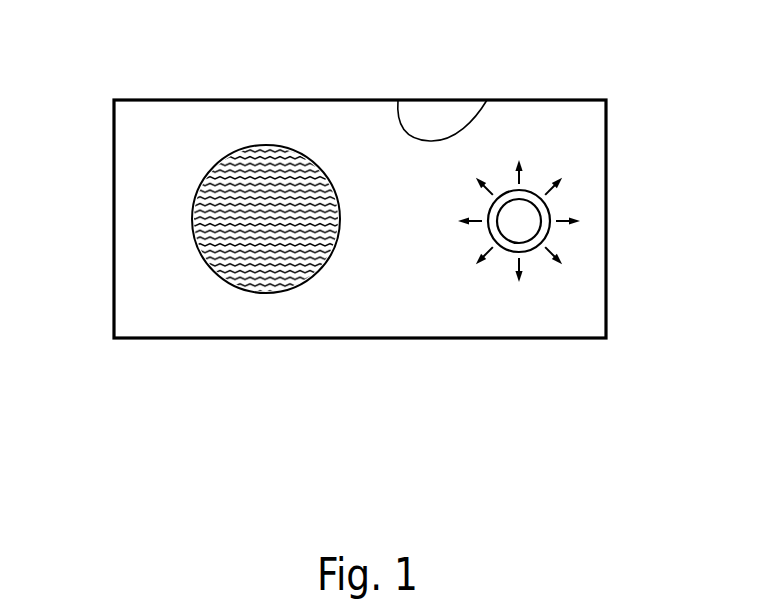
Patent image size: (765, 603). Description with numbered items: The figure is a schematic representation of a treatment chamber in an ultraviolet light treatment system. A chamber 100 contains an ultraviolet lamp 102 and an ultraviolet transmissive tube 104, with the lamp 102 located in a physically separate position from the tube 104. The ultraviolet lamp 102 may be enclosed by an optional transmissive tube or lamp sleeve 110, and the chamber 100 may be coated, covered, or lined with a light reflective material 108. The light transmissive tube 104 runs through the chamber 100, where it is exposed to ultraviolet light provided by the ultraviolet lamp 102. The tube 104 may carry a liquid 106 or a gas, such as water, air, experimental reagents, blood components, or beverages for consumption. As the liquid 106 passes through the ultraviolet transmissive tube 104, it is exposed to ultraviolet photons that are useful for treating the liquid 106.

The chamber 100 is at (607, 288).
The ultraviolet lamp 102 is at (540, 213).
The ultraviolet transmissive tube 104 is at (173, 222).
The liquid 106 is at (258, 173).
The light reflective material 108 is at (487, 100).
The optional transmissive tube (lamp sleeve) 110 is at (532, 190).